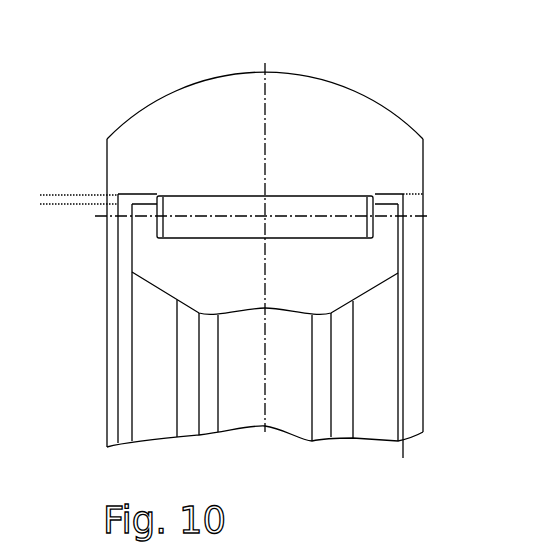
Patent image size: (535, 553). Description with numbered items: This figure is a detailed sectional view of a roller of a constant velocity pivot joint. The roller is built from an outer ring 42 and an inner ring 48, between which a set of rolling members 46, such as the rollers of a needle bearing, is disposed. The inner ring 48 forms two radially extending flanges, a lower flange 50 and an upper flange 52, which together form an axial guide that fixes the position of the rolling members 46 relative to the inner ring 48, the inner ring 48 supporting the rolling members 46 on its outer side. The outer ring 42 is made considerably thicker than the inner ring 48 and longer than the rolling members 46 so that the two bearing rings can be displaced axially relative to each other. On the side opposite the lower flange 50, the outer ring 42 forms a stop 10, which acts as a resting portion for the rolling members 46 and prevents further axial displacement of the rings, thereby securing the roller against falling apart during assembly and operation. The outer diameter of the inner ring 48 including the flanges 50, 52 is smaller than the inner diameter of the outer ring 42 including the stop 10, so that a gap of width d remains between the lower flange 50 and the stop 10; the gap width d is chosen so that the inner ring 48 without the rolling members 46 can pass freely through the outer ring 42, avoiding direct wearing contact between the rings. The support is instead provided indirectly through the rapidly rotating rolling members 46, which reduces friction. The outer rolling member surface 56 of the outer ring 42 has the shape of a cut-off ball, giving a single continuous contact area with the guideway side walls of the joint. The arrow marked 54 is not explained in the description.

The stop 10 is at (117, 197).
The outer ring 42 is at (212, 175).
The rolling members 46 is at (337, 232).
The inner ring 48 is at (182, 280).
The lower flange 50 is at (147, 225).
The upper flange 52 is at (383, 220).
The direction of combustion bowl 54 is at (254, 319).
The outer rolling member surface 56 is at (352, 85).
The gap width d is at (48, 232).